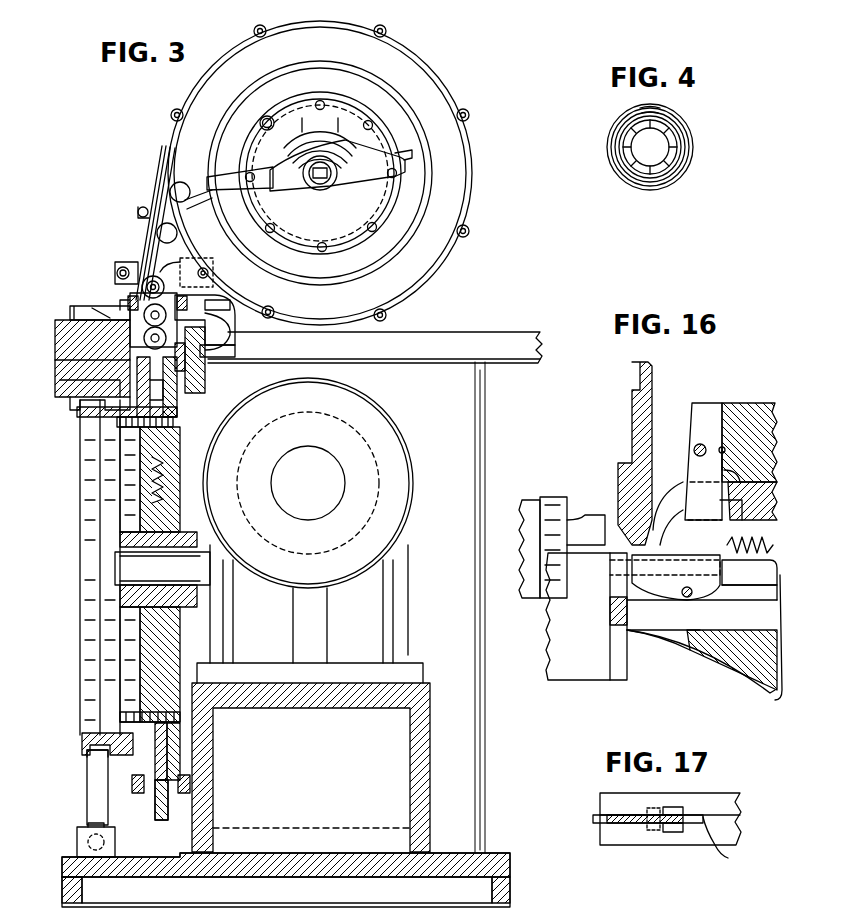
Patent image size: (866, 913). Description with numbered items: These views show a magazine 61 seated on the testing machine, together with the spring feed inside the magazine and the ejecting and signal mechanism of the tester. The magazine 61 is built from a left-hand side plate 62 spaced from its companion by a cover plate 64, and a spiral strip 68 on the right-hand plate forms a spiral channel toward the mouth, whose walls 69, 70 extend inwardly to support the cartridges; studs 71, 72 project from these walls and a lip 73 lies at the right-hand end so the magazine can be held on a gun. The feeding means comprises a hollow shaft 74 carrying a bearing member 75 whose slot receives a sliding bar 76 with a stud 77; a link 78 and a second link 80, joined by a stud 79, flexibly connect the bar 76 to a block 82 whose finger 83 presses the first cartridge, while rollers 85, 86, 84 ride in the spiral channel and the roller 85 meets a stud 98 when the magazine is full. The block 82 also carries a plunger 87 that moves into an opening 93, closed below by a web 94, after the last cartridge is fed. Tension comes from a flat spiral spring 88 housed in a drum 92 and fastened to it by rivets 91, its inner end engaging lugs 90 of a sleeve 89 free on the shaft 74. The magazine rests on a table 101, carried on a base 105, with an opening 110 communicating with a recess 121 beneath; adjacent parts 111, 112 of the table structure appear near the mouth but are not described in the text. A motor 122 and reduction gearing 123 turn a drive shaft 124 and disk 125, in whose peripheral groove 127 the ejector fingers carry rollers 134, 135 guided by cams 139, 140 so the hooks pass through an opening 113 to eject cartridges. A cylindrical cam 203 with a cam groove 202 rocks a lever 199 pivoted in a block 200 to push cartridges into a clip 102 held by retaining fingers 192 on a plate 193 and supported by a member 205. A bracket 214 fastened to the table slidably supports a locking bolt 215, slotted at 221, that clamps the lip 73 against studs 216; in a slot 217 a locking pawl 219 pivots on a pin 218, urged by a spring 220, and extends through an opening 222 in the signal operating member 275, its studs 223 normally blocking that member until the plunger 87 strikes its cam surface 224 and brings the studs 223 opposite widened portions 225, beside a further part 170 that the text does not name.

In FIG. 3, the magazine 61 is at (422, 40).
In FIG. 3, the cover plate 64 is at (432, 78).
In FIG. 3, the left-hand side plate 62 is at (452, 112).
In FIG. 3, the spiral strip 68 is at (462, 137).
In FIG. 3, the flat spiral spring 88 is at (352, 128).
In FIG. 4, the flat spiral spring 88 is at (676, 174).
In FIG. 3, the stud 98 is at (264, 116).
In FIG. 3, the drum 92 is at (306, 118).
In FIG. 3, the rivets 91 is at (336, 118).
In FIG. 3, the hollow spindle or shaft 74 is at (345, 185).
In FIG. 4, the hollow spindle or shaft 74 is at (678, 158).
In FIG. 3, the bearing member 75 is at (320, 190).
In FIG. 3, the bar 76 is at (274, 190).
In FIG. 3, the stud 77 is at (166, 164).
In FIG. 3, the link 80 is at (172, 238).
In FIG. 3, the roller 85 is at (170, 190).
In FIG. 3, the roller 86 is at (140, 208).
In FIG. 3, the stud 79 is at (157, 233).
In FIG. 3, the block 82 is at (148, 278).
In FIG. 3, the roller 84 is at (118, 270).
In FIG. 16, the roller 84 is at (522, 503).
In FIG. 3, the plunger 87 is at (196, 272).
In FIG. 16, the plunger 87 is at (588, 512).
In FIG. 3, the link 78 is at (192, 204).
In FIG. 3, the stud 71 is at (92, 300).
In FIG. 3, the bearing 111 is at (128, 298).
In FIG. 3, the plate 112 is at (70, 310).
In FIG. 3, the opening 110 is at (78, 328).
In FIG. 16, the opening 110 is at (612, 630).
In FIG. 3, the wall of the mouth 69 is at (70, 352).
In FIG. 3, the cam 139 is at (74, 372).
In FIG. 3, the table 101 is at (62, 390).
In FIG. 16, the table 101 is at (748, 678).
In FIG. 3, the cam 140 is at (205, 380).
In FIG. 3, the recess 121 is at (190, 400).
In FIG. 16, the recess 121 is at (700, 660).
In FIG. 3, the finger 83 is at (200, 298).
In FIG. 3, the stud 72 is at (214, 308).
In FIG. 3, the wall of the mouth 70 is at (212, 328).
In FIG. 3, the retaining fingers 192 is at (238, 343).
In FIG. 3, the plate 193 is at (240, 330).
In FIG. 3, the clip 102 is at (416, 342).
In FIG. 3, the motor 122 is at (386, 428).
In FIG. 3, the member 205 is at (486, 383).
In FIG. 3, the reduction gearing 123 is at (421, 588).
In FIG. 3, the drive shaft 124 is at (122, 566).
In FIG. 3, the disk 125 is at (166, 652).
In FIG. 3, the cylindrical cam 203 is at (84, 738).
In FIG. 3, the cam groove 202 is at (88, 768).
In FIG. 3, the lever 199 is at (88, 793).
In FIG. 3, the block 200 is at (78, 840).
In FIG. 3, the peripheral groove 127 is at (158, 760).
In FIG. 3, the roller 135 is at (182, 782).
In FIG. 3, the roller 134 is at (140, 795).
In FIG. 3, the base 105 is at (66, 880).
In FIG. 4, the sleeve 89 is at (678, 136).
In FIG. 4, the lugs 90 is at (660, 106).
In FIG. 16, the opening 93 is at (618, 488).
In FIG. 16, the locking bolt supporting bracket 214 is at (742, 405).
In FIG. 16, the locking pawl 219 is at (700, 403).
In FIG. 17, the locking pawl 219 is at (604, 806).
In FIG. 16, the slot 217 is at (720, 446).
In FIG. 16, the pin 218 is at (694, 446).
In FIG. 16, the locking bolt 215 is at (724, 474).
In FIG. 16, the slot 221 is at (722, 508).
In FIG. 16, the lip 73 is at (652, 520).
In FIG. 16, the opening 113 is at (612, 658).
In FIG. 16, the cam surface 224 is at (627, 580).
In FIG. 16, the web 94 is at (610, 610).
In FIG. 16, the studs 216 is at (672, 545).
In FIG. 16, the spring 220 is at (727, 547).
In FIG. 16, the studs 223 is at (682, 598).
In FIG. 17, the studs 223 is at (650, 832).
In FIG. 16, the opening 222 is at (735, 585).
In FIG. 17, the opening 222 is at (726, 857).
In FIG. 16, the widened portions 225 is at (705, 605).
In FIG. 17, the widened portions 225 is at (683, 808).
In FIG. 16, the plate 170 is at (688, 648).
In FIG. 16, the signal operating member 275 is at (780, 695).
In FIG. 17, the signal operating member 275 is at (606, 830).